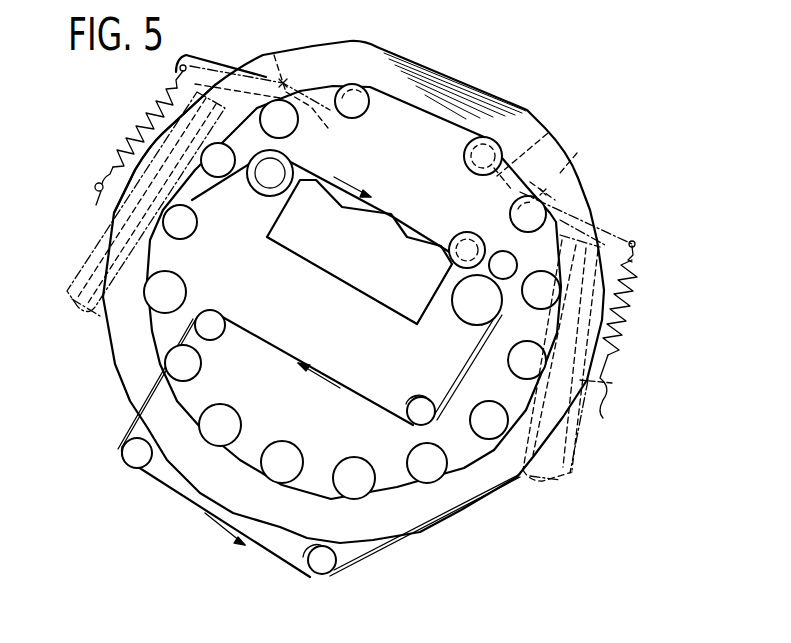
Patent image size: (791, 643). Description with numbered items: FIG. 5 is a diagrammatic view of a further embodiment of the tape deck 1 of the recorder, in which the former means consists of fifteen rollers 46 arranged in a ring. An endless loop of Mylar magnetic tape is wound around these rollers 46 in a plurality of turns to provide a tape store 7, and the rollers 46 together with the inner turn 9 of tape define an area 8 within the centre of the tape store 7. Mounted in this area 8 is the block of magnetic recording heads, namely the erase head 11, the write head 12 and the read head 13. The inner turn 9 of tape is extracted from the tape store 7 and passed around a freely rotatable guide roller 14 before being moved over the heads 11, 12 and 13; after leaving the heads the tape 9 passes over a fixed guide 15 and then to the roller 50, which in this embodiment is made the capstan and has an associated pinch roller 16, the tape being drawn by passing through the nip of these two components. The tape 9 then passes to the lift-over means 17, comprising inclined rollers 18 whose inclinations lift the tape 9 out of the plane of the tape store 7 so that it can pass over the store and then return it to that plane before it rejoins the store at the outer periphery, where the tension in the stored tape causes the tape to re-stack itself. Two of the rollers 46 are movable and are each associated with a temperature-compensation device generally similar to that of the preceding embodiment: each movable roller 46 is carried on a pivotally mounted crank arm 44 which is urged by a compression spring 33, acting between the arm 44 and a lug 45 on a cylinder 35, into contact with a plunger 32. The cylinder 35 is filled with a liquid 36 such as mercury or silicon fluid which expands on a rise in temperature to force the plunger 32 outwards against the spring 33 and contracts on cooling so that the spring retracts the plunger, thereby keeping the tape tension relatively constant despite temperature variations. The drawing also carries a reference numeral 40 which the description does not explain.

The tape deck 1 is at (476, 70).
The tape store 7 is at (419, 80).
The area within the tape store 8 is at (400, 478).
The inner turn of tape 9 is at (412, 217).
The ERASE head 11 is at (296, 237).
The WRITE head 12 is at (341, 269).
The READ head 13 is at (394, 302).
The guide roller 14 is at (267, 178).
The fixed guide 15 is at (468, 236).
The pinch roller 16 is at (471, 311).
The lift-over means 17 is at (414, 386).
The inclined rollers 18 is at (212, 317).
The plunger 32 is at (181, 140).
The compression spring 33 is at (147, 105).
The cylinder 35 is at (100, 236).
The liquid 36 is at (85, 284).
The pivot 40 is at (429, 101).
The crank arm 44 is at (557, 127).
The lug 45 is at (96, 185).
The rollers 46 is at (361, 162).
The roller 50 is at (509, 254).